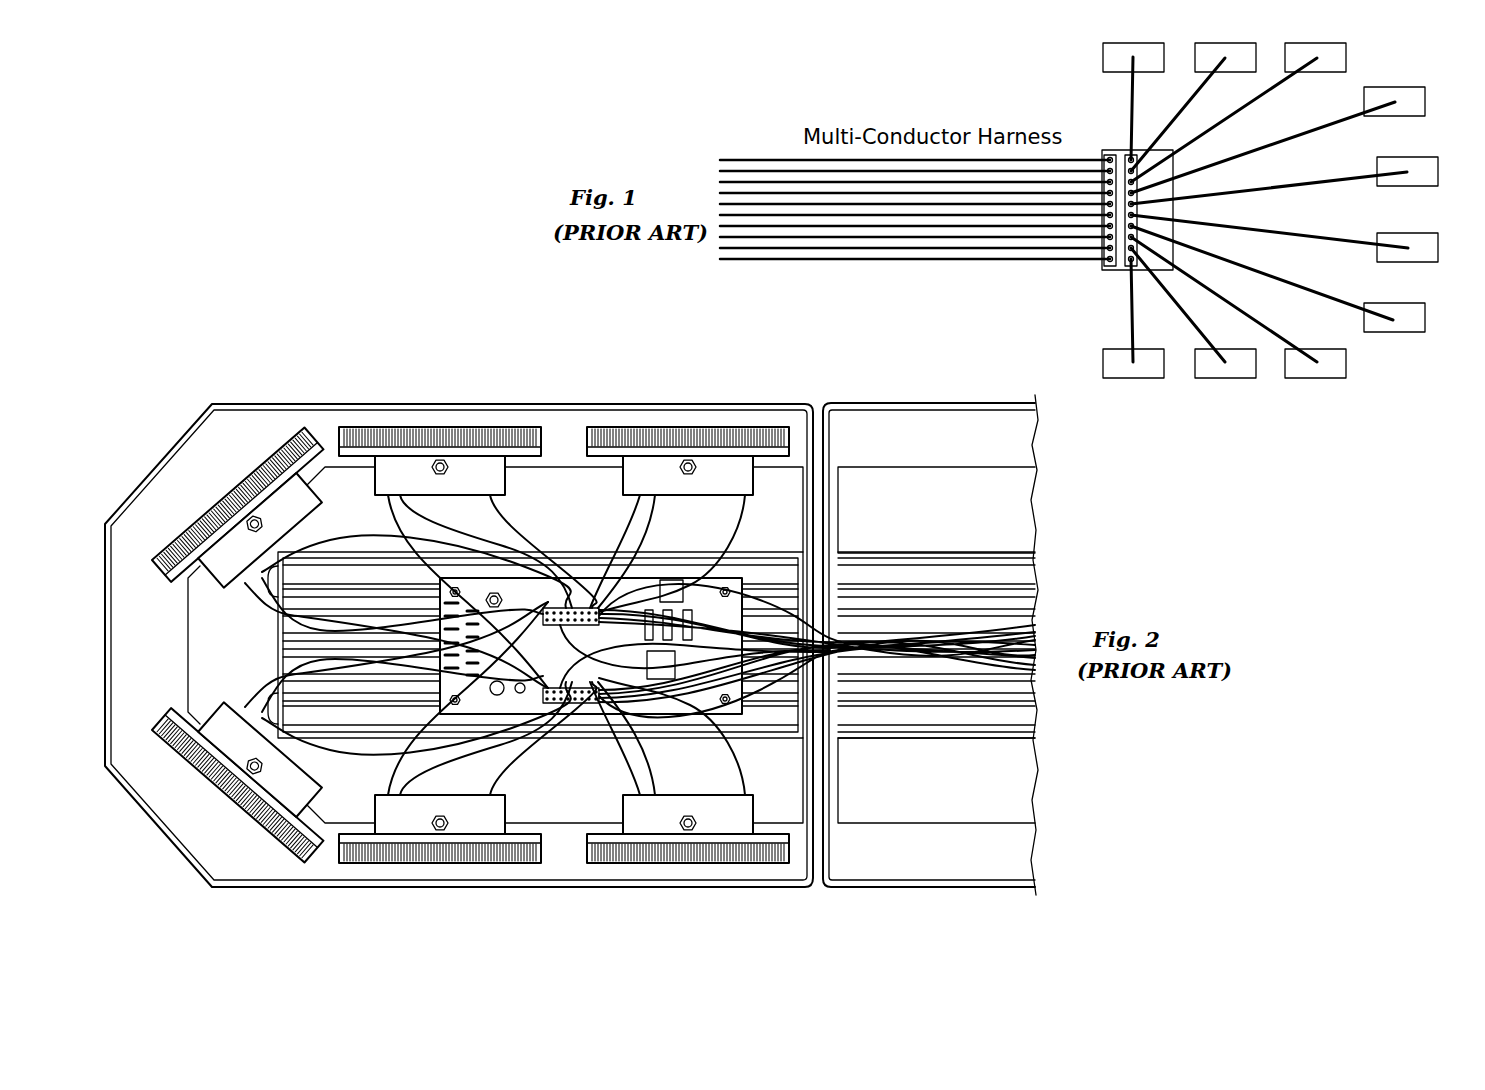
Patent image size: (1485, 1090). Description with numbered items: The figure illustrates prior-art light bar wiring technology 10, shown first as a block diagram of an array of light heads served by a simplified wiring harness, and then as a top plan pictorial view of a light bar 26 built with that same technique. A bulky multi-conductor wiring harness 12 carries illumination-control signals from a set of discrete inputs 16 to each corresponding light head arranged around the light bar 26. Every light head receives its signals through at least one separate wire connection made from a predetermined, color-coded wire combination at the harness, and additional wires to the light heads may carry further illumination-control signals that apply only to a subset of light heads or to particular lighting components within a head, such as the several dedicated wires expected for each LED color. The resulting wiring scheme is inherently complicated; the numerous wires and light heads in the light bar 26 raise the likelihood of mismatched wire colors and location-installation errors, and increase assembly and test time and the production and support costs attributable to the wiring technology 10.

In FIG. 1, the light bar wiring technology 10 is at (934, 188).
In FIG. 2, the light bar wiring technology 10 is at (616, 666).
In FIG. 1, the multi-conductor wiring harness 12 is at (1108, 150).
In FIG. 2, the multi-conductor wiring harness 12 is at (543, 617).
In FIG. 1, the discrete inputs 16 is at (752, 266).
In FIG. 2, the discrete inputs 16 is at (932, 604).
In FIG. 2, the light bar 26 is at (167, 484).